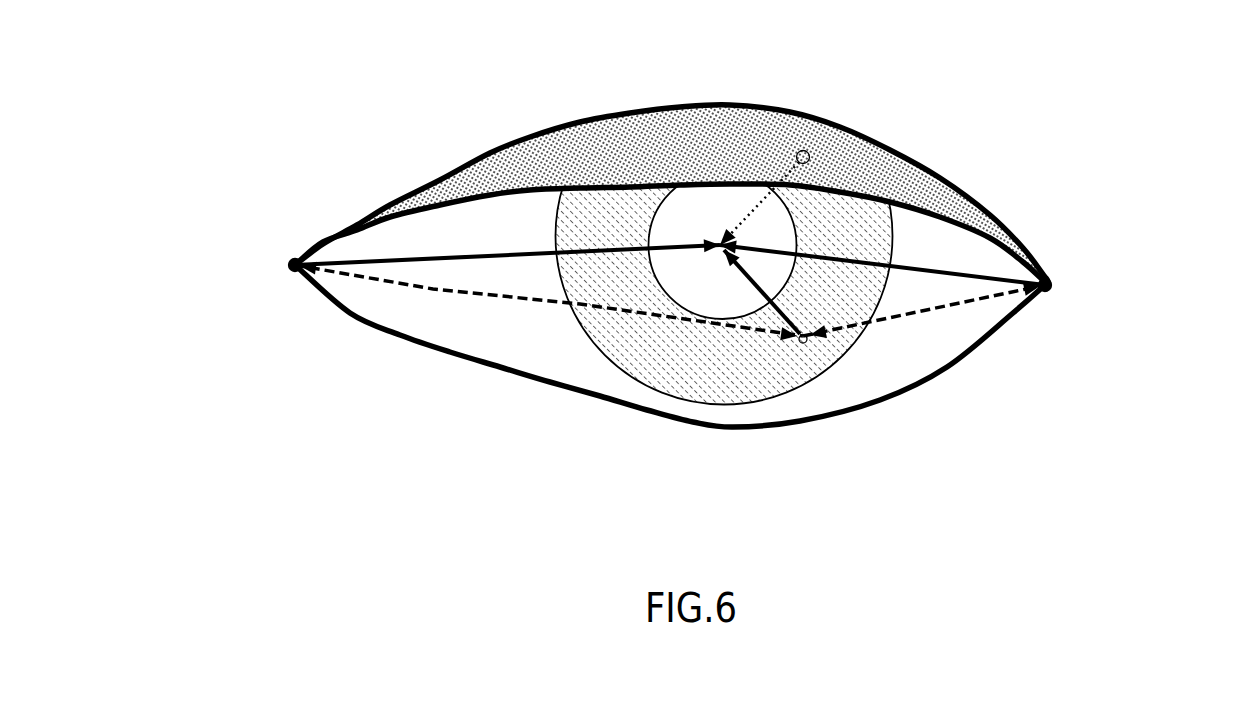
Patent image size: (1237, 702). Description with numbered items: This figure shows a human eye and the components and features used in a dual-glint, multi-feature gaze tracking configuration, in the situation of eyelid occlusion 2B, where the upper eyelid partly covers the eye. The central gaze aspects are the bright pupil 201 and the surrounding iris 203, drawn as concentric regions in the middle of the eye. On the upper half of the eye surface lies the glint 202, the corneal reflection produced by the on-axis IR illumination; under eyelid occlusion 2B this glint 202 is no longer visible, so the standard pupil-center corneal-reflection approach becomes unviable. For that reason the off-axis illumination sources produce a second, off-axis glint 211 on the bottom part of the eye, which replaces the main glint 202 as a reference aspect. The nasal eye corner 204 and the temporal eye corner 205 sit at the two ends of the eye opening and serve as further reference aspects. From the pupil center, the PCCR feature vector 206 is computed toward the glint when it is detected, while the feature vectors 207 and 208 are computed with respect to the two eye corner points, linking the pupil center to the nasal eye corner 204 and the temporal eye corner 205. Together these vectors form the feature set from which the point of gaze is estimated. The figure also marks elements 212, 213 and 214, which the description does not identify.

The eyelid occlusion 2B is at (535, 158).
The bright pupil 201 is at (723, 293).
The glint 202 is at (810, 150).
The iris 203 is at (613, 350).
The nasal eye corner 204 is at (1045, 292).
The temporal eye corner 205 is at (290, 277).
The PCCR feature vector 206 is at (770, 203).
The eye corner point feature vector 207 is at (893, 270).
The eye corner point feature vector 208 is at (507, 260).
The off-axis glint 211 is at (803, 345).
The upper eyelid edge 212 is at (720, 293).
The left corner-to-gaze-point line 213 is at (438, 287).
The right corner-to-gaze-point line 214 is at (945, 300).